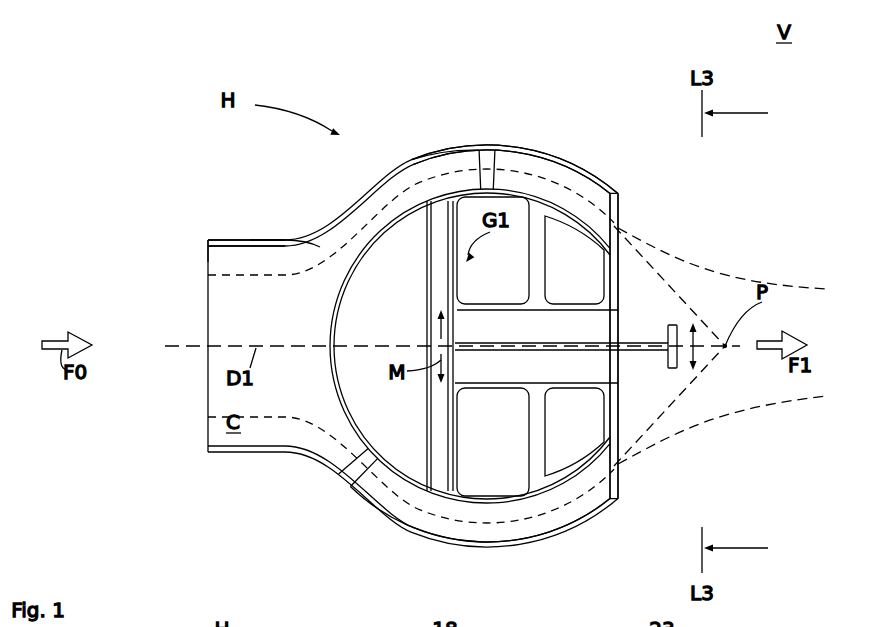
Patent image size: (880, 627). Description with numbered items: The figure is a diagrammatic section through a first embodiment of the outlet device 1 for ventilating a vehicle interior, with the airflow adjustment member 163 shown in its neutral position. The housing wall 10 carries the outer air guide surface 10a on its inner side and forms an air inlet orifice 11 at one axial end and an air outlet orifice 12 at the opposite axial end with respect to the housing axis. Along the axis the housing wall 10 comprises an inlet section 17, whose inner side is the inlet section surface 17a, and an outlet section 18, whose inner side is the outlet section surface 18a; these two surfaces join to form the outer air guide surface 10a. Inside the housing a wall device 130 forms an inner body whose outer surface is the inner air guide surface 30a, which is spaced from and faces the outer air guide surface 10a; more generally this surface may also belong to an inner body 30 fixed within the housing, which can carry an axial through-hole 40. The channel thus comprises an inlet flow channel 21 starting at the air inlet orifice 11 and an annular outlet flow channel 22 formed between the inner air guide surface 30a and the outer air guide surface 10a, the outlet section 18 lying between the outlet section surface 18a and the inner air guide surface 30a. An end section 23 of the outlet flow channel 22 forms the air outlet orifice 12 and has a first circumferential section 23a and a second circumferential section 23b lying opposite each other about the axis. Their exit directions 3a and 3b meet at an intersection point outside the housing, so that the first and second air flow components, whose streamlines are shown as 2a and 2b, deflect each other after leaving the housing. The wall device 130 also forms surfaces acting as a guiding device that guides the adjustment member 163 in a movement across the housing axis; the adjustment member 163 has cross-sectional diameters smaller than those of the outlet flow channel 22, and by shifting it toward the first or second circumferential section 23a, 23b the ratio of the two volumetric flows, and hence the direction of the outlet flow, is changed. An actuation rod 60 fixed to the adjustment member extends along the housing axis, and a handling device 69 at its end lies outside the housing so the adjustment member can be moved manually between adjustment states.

The outlet device 1 is at (728, 166).
The streamlines of the exiting first air flow component 2a is at (748, 400).
The streamlines of the exiting second air flow component 2b is at (735, 283).
The direction of the exiting first air flow component 3a is at (659, 416).
The direction of the exiting second air flow component 3b is at (670, 285).
The housing wall 10 is at (600, 187).
The outer air guide surface 10a is at (243, 259).
The air inlet orifice 11 is at (181, 306).
The air outlet orifice 12 is at (652, 211).
The inlet section 17 is at (246, 240).
The inlet section surface 17a is at (211, 252).
The outlet section 18 is at (533, 150).
The outlet section surface 18a is at (553, 178).
The inlet flow channel 21 is at (265, 243).
The outlet flow channel 22 is at (510, 162).
The end section 23 is at (582, 185).
The first circumferential section 23a is at (590, 498).
The second circumferential section 23b is at (460, 172).
The inner body 30 is at (362, 500).
The inner air guide surface 30a is at (550, 492).
The through-hole 40 is at (494, 320).
The actuation rod 60 is at (502, 360).
The handling device 69 is at (678, 370).
The wall device 130 is at (350, 282).
The airflow adjustment member 163 is at (430, 497).